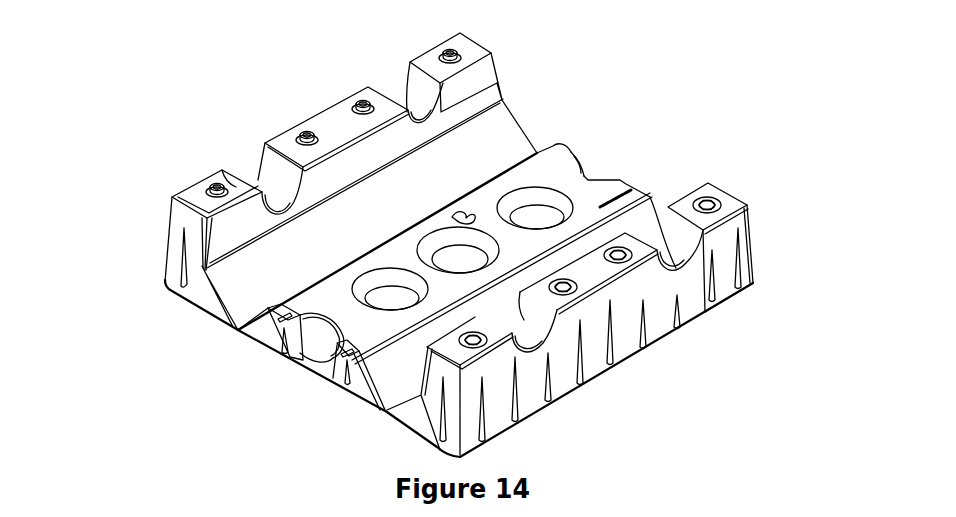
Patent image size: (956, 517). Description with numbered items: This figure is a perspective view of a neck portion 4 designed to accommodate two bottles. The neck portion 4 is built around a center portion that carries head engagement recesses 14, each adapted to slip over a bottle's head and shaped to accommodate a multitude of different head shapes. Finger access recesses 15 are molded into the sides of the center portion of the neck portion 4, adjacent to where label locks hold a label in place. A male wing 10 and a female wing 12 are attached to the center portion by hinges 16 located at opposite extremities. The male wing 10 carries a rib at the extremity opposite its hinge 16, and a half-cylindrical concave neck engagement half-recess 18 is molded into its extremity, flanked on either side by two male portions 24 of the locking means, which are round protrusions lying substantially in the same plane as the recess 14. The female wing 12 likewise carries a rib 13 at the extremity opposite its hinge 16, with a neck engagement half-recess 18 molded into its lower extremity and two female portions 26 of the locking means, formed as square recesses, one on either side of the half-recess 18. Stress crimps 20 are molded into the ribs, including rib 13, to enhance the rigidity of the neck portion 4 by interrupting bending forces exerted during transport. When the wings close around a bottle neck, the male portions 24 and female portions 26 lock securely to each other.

The neck portion 4 is at (141, 207).
The male wing 10 is at (487, 75).
The female wing 12 is at (717, 192).
The rib 13 is at (722, 285).
The head engagement recess 14 is at (537, 205).
The finger access recesses 15 is at (587, 177).
The hinges 16 is at (240, 329).
The neck engagement half-recess 18 is at (255, 177).
The stress crimps 20 is at (642, 335).
The male portions of locking means 24 is at (307, 135).
The female portions of locking means 26 is at (708, 207).